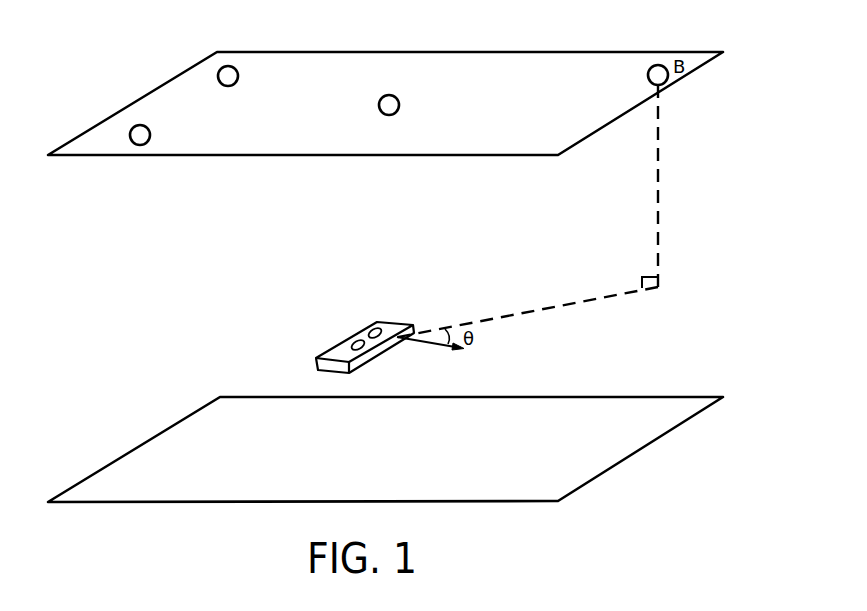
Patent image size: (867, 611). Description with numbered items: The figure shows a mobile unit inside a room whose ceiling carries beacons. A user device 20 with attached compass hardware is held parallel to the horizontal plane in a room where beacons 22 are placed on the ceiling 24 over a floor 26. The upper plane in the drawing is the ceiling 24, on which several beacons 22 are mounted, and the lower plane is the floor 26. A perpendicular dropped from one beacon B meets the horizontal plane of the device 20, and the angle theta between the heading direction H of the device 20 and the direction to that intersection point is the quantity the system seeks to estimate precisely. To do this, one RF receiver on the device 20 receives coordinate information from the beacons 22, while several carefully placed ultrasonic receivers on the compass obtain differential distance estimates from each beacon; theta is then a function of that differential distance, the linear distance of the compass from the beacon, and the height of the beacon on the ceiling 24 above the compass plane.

The user device 20 is at (337, 347).
The beacons 22 is at (138, 125).
The ceiling 24 is at (183, 157).
The floor 26 is at (138, 445).